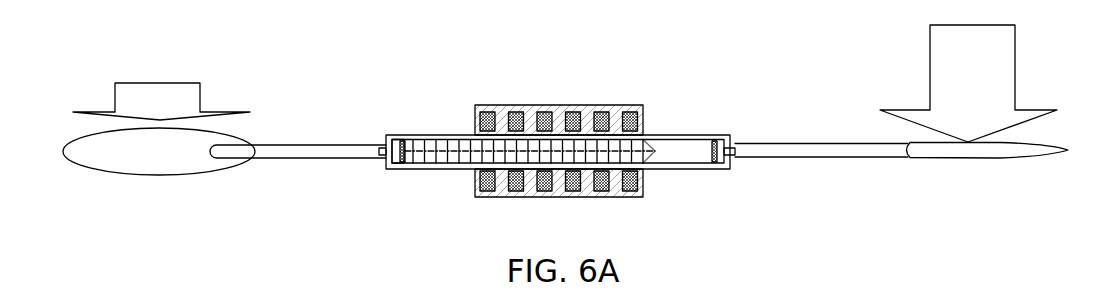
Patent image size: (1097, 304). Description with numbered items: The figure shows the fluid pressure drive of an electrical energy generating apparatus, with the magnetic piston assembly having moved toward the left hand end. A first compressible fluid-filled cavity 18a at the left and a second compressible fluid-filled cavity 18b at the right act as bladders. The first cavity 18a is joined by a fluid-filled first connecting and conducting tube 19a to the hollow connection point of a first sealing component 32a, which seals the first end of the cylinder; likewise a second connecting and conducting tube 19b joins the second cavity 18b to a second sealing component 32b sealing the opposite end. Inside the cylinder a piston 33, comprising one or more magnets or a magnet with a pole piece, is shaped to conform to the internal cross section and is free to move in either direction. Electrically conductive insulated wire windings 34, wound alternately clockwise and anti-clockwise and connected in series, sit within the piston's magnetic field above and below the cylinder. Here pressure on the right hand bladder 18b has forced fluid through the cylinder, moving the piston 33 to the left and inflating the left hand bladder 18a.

The first compressible fluid-filled cavity 18a is at (83, 154).
The first connecting and conducting tube 19a is at (280, 159).
The first sealing component 32a is at (377, 139).
The second sealing component 32b is at (748, 136).
The piston 33 is at (657, 154).
The electrically conductive insulated wire windings 34 is at (493, 109).
The second connecting and conducting tube 19b is at (833, 155).
The second compressible fluid-filled cavity 18b is at (1005, 150).